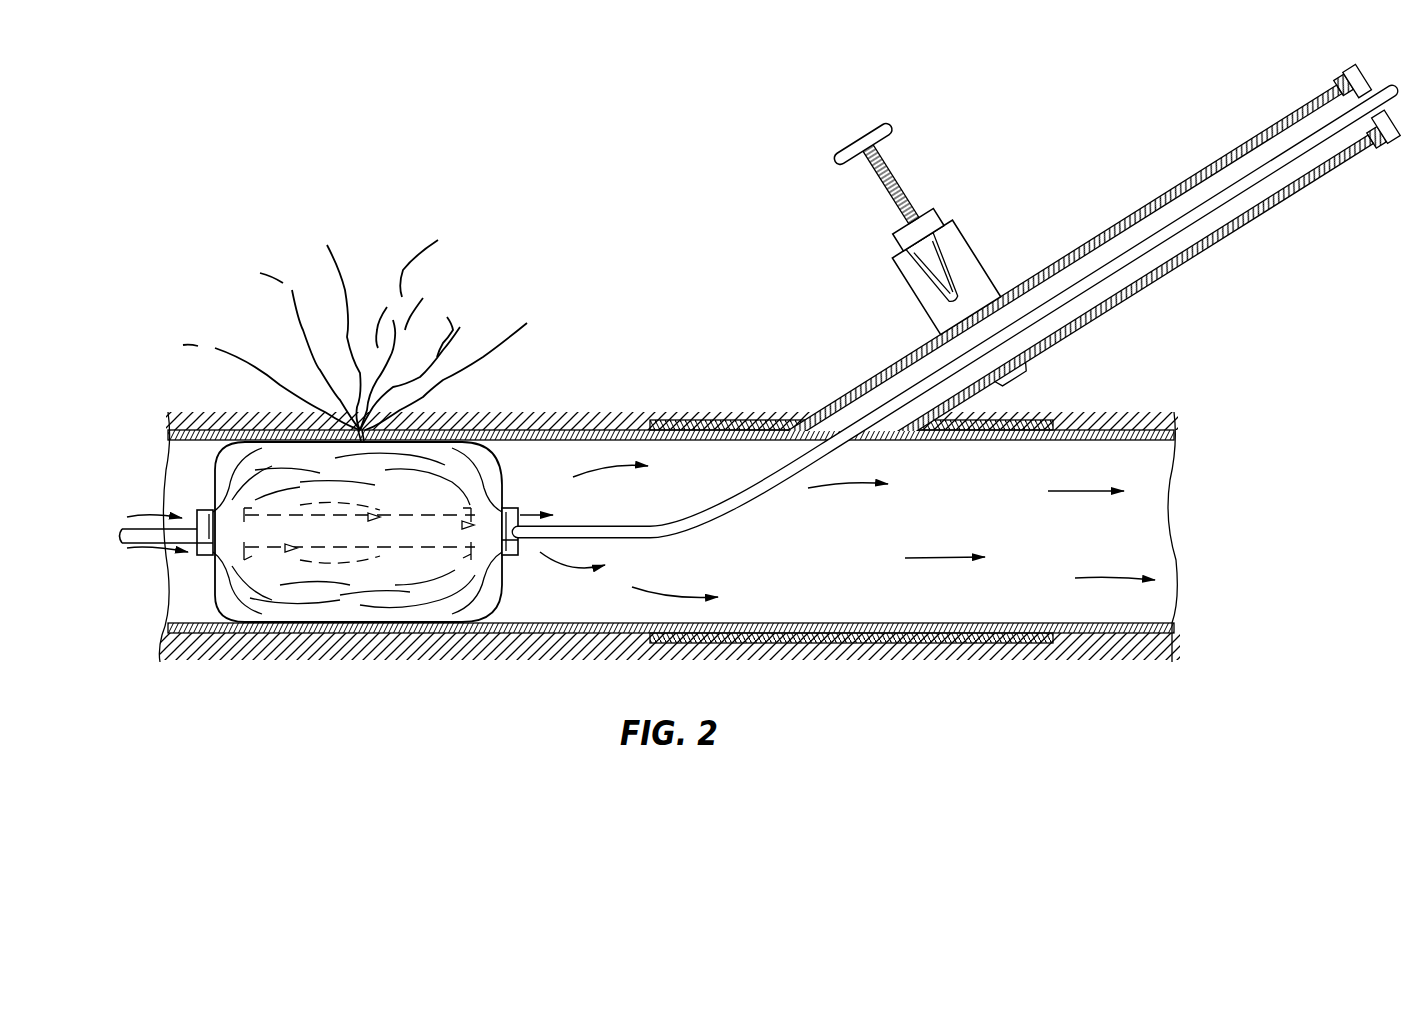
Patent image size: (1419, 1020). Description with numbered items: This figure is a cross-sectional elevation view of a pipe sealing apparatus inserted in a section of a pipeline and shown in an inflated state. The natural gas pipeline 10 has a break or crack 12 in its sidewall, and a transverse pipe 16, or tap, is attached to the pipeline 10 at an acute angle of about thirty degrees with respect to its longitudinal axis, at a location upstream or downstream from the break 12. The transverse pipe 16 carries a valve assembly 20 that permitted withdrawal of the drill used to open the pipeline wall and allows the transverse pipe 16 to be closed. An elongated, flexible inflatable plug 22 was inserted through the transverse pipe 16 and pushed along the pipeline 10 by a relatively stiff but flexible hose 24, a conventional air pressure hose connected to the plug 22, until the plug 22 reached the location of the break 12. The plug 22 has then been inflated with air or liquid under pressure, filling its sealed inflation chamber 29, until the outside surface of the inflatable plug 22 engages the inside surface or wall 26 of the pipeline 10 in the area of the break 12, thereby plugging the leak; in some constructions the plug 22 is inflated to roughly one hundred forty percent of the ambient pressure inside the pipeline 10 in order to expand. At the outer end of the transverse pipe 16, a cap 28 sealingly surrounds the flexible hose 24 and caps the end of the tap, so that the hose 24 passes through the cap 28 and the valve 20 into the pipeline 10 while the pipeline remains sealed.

The natural gas pipeline 10 is at (556, 412).
The break or crack 12 is at (362, 441).
The transverse pipe 16 is at (1163, 193).
The valve assembly 20 is at (975, 252).
The inflatable plug 22 is at (497, 608).
The flexible hose 24 is at (700, 515).
The inside surface or wall 26 is at (172, 464).
The cap 28 is at (1333, 88).
The inflation chamber 29 is at (238, 452).